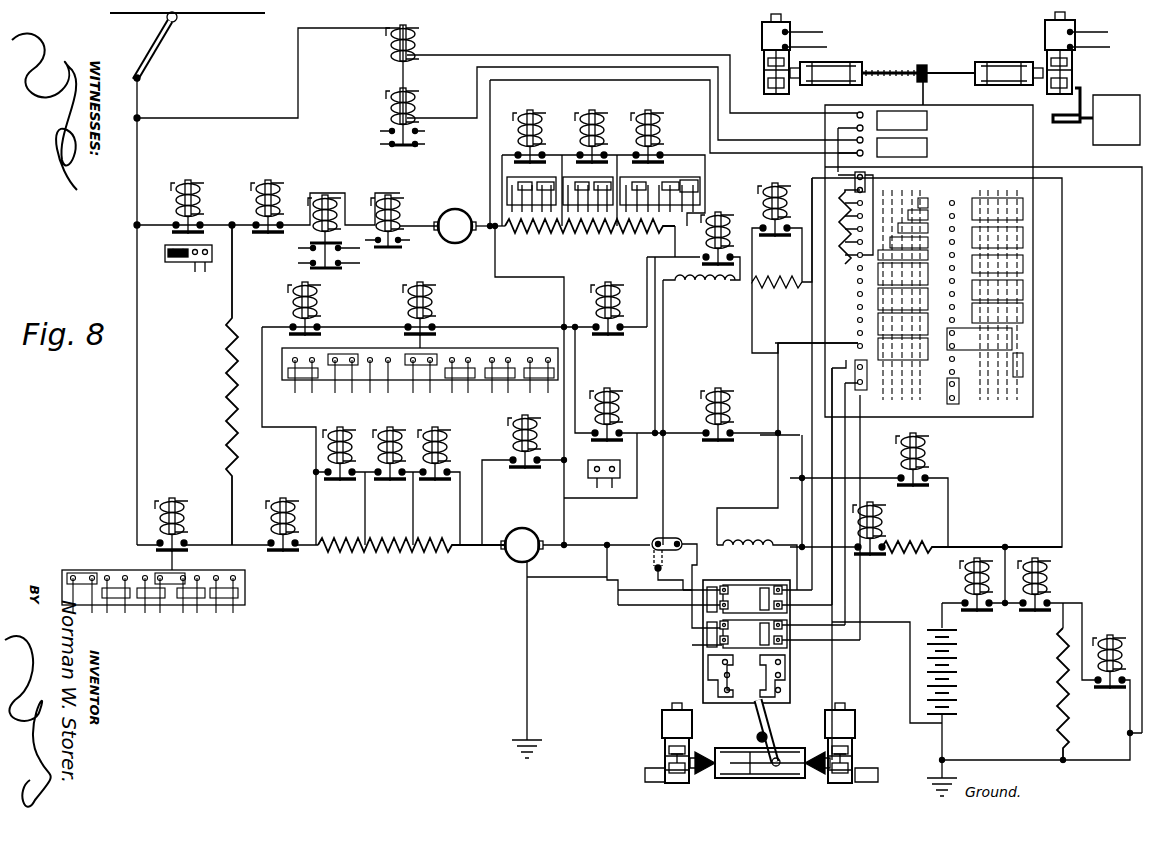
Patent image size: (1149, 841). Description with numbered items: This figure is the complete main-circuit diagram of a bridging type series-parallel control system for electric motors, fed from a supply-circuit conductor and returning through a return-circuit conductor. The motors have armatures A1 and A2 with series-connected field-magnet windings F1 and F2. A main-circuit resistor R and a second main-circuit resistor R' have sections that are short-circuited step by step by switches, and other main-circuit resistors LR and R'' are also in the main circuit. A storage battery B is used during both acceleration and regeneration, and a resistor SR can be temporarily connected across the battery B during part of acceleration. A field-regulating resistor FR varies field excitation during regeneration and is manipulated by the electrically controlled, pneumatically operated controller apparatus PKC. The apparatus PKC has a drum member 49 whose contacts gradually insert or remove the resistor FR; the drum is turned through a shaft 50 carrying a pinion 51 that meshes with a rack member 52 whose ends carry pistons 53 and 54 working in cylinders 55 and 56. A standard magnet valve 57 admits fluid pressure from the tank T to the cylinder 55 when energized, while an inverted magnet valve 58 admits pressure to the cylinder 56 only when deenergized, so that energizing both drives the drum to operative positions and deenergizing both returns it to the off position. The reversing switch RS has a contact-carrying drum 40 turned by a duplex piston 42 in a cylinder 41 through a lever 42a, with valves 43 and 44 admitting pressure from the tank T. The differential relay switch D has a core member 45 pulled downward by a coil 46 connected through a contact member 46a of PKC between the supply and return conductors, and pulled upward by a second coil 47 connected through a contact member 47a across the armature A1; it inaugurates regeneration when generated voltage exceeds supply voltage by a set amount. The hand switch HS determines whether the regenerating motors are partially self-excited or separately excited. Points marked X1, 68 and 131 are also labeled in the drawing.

The contact-segment-carrying drum 40 is at (703, 690).
The cylinder 41 is at (760, 773).
The duplex piston 42 is at (779, 733).
The lever 42a is at (767, 722).
The valve 43 is at (665, 762).
The valve 44 is at (855, 763).
The core member 45 is at (410, 40).
The coil 46 is at (405, 28).
The contact member 46a is at (902, 120).
The second coil 47 is at (410, 103).
The contact member 47a is at (902, 147).
The drum member 49 is at (1025, 417).
The shaft 50 is at (935, 93).
The pinion 51 is at (922, 65).
The rack member 52 is at (890, 70).
The piston 53 is at (826, 65).
The piston 54 is at (985, 62).
The cylinder 55 is at (850, 62).
The cylinder 56 is at (1017, 62).
The standard magnet valve 57 is at (763, 76).
The inverted magnet valve 58 is at (1072, 76).
The contact 68 is at (733, 690).
The contact 131 is at (760, 674).
The differential relay switch D is at (424, 81).
The tank T is at (1096, 116).
The terminal X1 is at (838, 165).
The controller apparatus PKC is at (938, 297).
The field-regulating resistor FR is at (841, 258).
The reversing switch RS is at (727, 641).
The manually operated switch HS is at (670, 553).
The field-magnet winding F1 is at (699, 298).
The field-magnet winding F2 is at (757, 551).
The main-circuit resistor R is at (590, 237).
The second main-circuit resistor R' is at (411, 555).
The main-circuit resistor R'' is at (972, 534).
The main-circuit resistor LR is at (216, 385).
The resistor SR is at (1048, 694).
The storage battery B is at (950, 695).
The armature A1 is at (455, 226).
The armature A2 is at (522, 545).